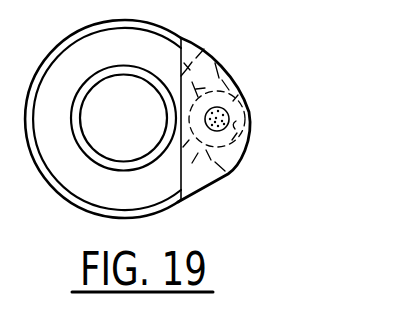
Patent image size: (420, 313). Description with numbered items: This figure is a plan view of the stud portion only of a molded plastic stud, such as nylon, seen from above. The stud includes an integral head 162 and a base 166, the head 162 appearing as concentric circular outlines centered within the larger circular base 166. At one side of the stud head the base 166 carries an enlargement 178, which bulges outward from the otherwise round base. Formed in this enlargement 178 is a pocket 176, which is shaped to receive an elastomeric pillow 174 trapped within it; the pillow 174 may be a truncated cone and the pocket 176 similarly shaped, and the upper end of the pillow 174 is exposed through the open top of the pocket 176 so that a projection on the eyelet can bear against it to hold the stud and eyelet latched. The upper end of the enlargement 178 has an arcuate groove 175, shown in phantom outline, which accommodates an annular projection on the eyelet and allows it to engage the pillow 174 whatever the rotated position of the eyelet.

The head 162 is at (101, 118).
The base 166 is at (99, 201).
The elastomeric pillow 174 is at (240, 91).
The arcuate groove 175 is at (207, 46).
The pocket 176 is at (238, 118).
The enlargement 178 is at (233, 168).